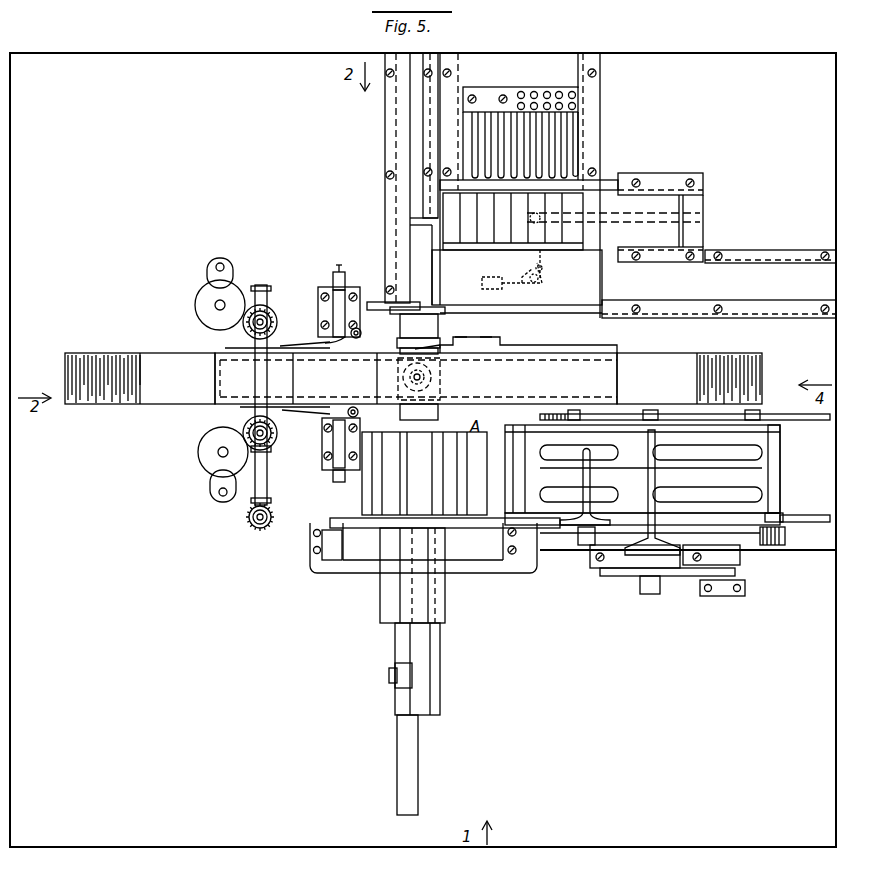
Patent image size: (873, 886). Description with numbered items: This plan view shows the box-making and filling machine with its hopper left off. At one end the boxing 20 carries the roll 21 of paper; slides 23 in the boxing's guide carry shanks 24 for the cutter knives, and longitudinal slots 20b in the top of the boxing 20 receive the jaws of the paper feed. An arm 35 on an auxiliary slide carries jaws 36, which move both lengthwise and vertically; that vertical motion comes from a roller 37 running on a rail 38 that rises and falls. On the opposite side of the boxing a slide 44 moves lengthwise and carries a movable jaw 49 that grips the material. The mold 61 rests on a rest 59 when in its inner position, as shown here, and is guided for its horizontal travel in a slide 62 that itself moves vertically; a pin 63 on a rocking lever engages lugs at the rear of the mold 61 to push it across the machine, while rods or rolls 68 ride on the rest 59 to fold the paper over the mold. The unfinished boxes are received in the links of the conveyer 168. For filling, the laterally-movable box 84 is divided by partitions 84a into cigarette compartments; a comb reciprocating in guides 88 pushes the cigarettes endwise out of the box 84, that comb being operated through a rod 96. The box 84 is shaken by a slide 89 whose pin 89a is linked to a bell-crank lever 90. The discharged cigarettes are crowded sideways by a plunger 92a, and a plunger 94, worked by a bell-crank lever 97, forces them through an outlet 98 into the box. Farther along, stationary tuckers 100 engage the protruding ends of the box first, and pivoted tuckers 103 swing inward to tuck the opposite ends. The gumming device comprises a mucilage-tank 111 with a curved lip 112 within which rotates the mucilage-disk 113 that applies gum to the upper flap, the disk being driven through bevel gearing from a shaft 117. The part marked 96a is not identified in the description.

The boxing 20 is at (667, 471).
The longitudinal slots 20b is at (707, 472).
The roll 21 is at (781, 485).
The slides 23 is at (653, 565).
The shanks 24 is at (656, 472).
The arm 35 is at (590, 476).
The jaws 36 is at (552, 452).
The roller 37 is at (580, 545).
The rail 38 is at (742, 533).
The slide 44 is at (440, 383).
The movable jaw 49 is at (448, 345).
The rest 59 is at (368, 488).
The mold 61 is at (424, 473).
The slide 62 is at (443, 593).
The pin 63 is at (392, 676).
The rods or rolls 68 is at (462, 478).
The laterally-movable box 84 is at (482, 97).
The partitions 84a is at (565, 148).
The guides 88 is at (578, 70).
The slide 89 is at (686, 216).
The pin 89a is at (685, 218).
The bell-crank lever 90 is at (517, 281).
The plunger 92a is at (719, 284).
The plunger 94 is at (410, 172).
The rod 96 is at (618, 222).
The pin 96a is at (552, 282).
The bell-crank lever 97 is at (564, 264).
The outlet 98 is at (415, 328).
The stationary tuckers 100 is at (362, 428).
The pivoted tuckers 103 is at (362, 345).
The mucilage-tank 111 is at (210, 456).
The curved lip 112 is at (255, 343).
The mucilage-disk 113 is at (276, 332).
The shaft 117 is at (255, 383).
The conveyer 168 is at (152, 370).